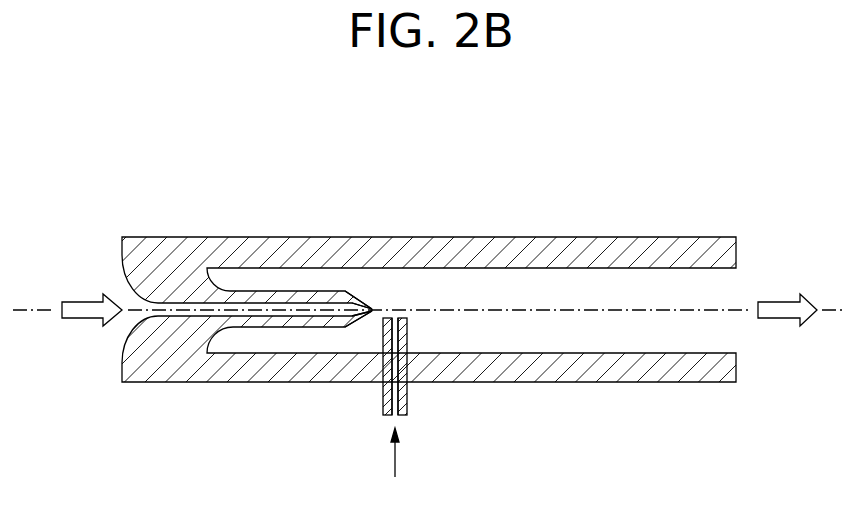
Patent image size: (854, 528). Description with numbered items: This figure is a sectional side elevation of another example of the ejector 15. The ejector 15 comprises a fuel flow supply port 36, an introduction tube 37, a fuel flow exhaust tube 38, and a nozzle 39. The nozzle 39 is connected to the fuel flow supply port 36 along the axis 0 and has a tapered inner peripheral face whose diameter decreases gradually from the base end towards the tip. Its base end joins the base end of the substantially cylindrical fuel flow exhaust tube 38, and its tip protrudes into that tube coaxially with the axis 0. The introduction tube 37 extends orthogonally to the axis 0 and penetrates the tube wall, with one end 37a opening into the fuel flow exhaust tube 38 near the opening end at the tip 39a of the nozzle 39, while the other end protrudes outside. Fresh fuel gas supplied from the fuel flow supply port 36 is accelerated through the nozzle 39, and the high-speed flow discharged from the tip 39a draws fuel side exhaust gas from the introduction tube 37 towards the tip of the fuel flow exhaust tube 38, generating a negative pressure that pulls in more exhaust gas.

The ejector 15 is at (427, 293).
The fuel flow supply port 36 is at (122, 272).
The introduction tube 37 is at (408, 407).
The one end of the introduction tube 37a is at (404, 318).
The fuel flow exhaust tube 38 is at (722, 350).
The nozzle 39 is at (378, 297).
The tip of the nozzle 39a is at (372, 316).
The axis 0 is at (30, 313).